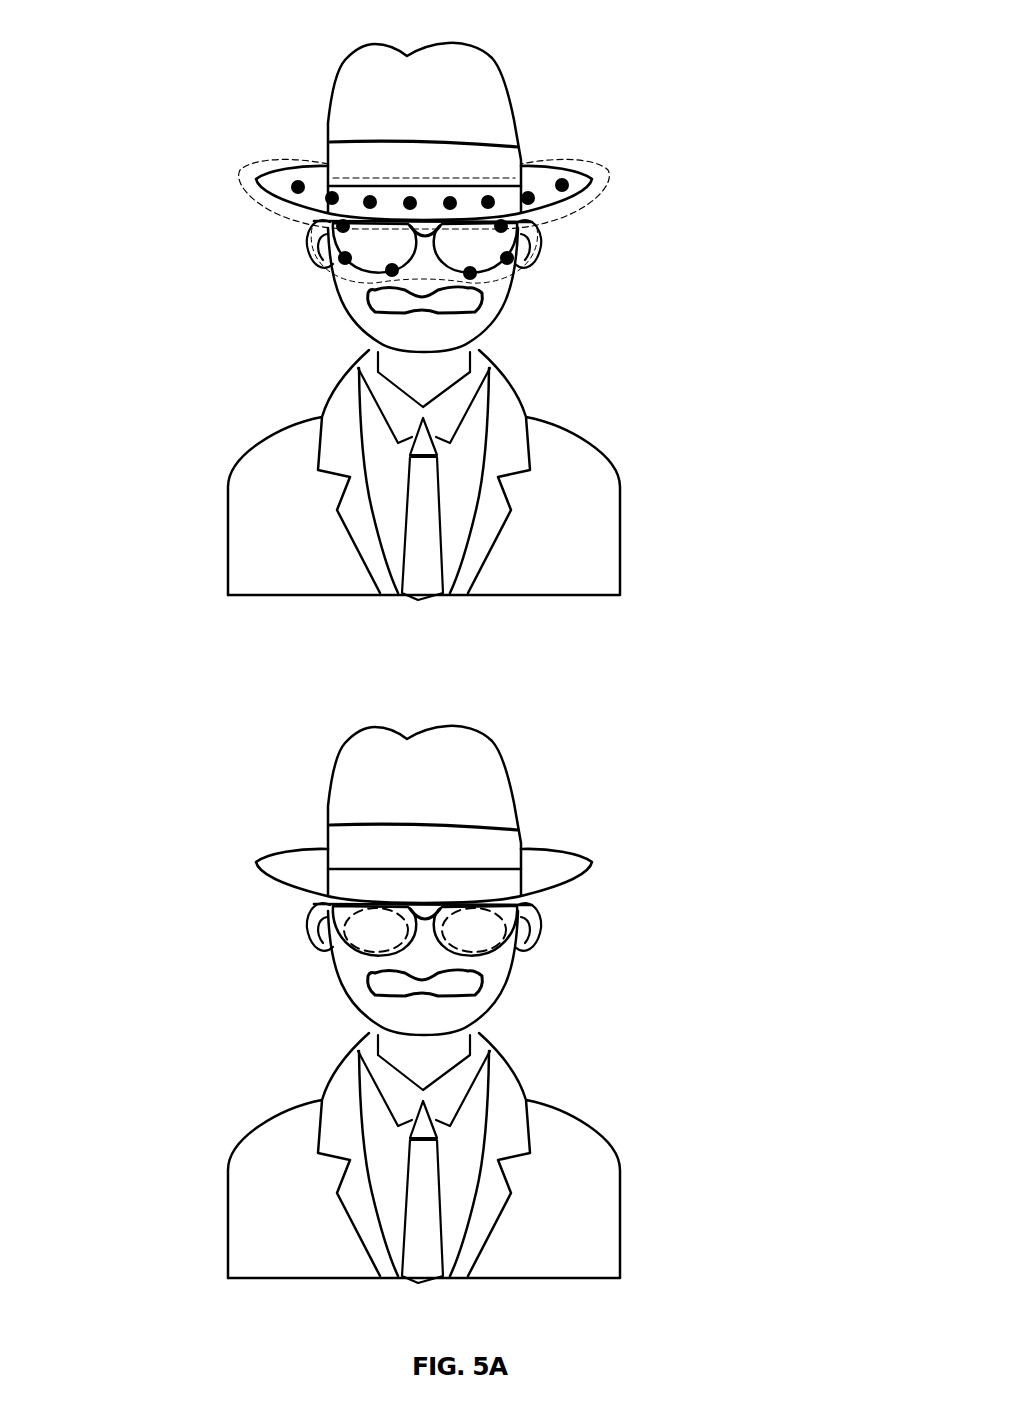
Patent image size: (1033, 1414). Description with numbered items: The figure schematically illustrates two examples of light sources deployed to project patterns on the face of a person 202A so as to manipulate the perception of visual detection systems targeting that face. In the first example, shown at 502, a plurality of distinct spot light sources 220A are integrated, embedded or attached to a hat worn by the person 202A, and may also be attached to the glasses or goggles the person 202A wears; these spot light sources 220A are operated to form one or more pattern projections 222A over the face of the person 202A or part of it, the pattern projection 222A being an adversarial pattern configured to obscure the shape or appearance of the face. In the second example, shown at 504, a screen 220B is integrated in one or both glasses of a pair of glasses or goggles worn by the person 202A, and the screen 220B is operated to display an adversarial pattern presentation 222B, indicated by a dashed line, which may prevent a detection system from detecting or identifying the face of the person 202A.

The first exemplary deployment 502 is at (721, 40).
The second exemplary deployment 504 is at (723, 725).
The person 202A is at (203, 144).
The distinct spot light sources 220A is at (536, 245).
The pattern projection 222A is at (294, 232).
The screen 220B is at (440, 907).
The adversarial pattern presentation 222B is at (449, 934).